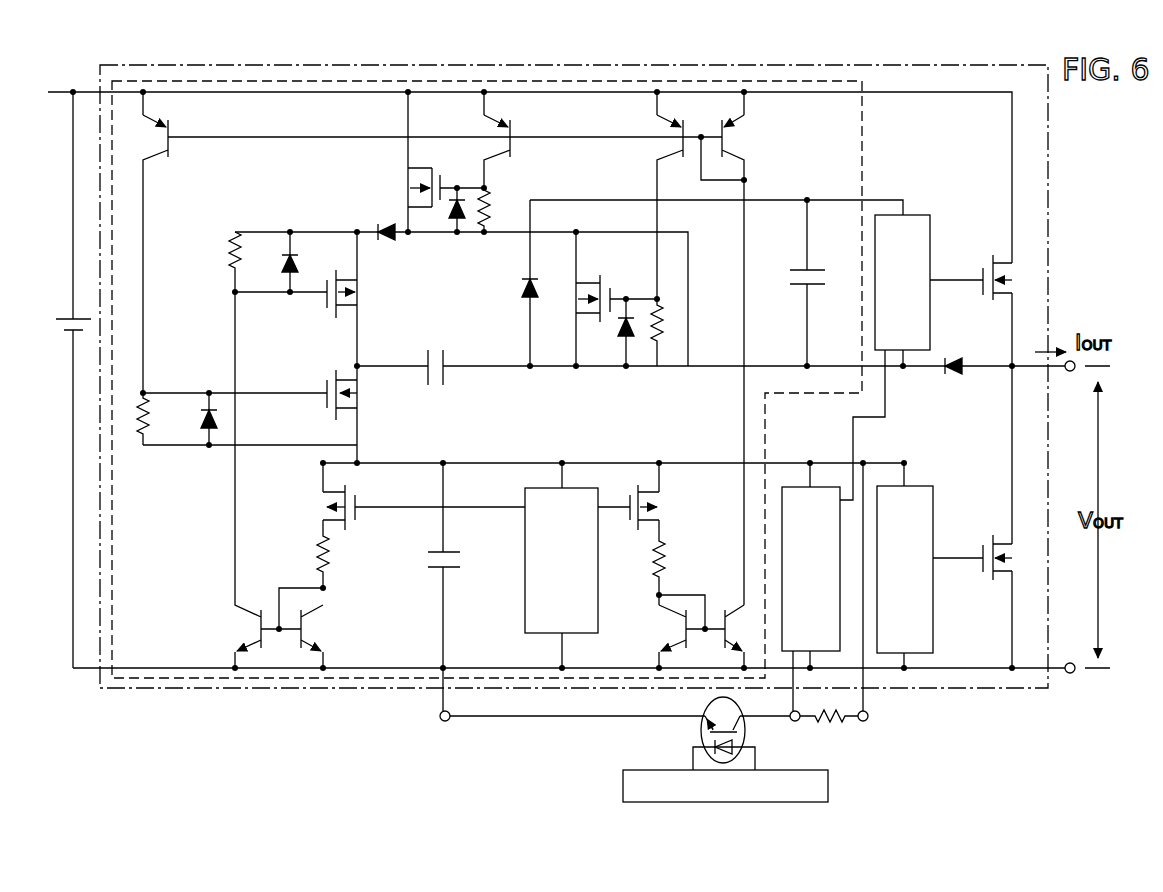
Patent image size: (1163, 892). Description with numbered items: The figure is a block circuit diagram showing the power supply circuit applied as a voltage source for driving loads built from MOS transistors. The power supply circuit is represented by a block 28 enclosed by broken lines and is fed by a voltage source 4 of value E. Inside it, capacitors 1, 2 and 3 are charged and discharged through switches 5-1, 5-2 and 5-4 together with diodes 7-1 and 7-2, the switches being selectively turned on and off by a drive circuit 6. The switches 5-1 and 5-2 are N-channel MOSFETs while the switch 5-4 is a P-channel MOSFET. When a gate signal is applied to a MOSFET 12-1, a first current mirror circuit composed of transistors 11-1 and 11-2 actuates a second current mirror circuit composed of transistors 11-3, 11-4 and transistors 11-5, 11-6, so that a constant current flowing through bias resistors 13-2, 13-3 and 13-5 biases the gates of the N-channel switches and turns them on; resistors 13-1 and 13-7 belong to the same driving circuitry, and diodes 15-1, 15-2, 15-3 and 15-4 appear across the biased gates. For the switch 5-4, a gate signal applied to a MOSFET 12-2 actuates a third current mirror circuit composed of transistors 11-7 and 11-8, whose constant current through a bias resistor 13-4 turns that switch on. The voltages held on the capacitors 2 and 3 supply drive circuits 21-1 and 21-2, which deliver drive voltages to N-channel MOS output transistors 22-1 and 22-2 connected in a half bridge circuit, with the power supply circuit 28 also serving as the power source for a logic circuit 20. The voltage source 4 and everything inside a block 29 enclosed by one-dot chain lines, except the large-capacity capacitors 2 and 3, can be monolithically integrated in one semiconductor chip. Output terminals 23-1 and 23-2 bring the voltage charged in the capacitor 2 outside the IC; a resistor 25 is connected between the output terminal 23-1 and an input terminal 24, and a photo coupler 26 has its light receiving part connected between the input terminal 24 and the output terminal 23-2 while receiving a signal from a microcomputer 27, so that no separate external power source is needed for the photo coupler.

The capacitor 1 is at (434, 350).
The capacitor 2 is at (464, 565).
The capacitor 3 is at (816, 268).
The voltage source 4 is at (57, 332).
The switch 5-1 is at (400, 178).
The switch 5-2 is at (608, 276).
The switch 5-4 is at (360, 296).
The drive circuit 6 is at (524, 603).
The diode 7-1 is at (522, 294).
The diode 7-2 is at (388, 240).
The transistor 11-1 is at (674, 630).
The transistor 11-2 is at (727, 603).
The transistor 11-3 is at (732, 133).
The transistor 11-4 is at (650, 129).
The transistor 11-5 is at (484, 129).
The transistor 11-6 is at (174, 128).
The transistor 11-7 is at (240, 631).
The transistor 11-8 is at (316, 631).
The MOSFET 12-1 is at (663, 500).
The MOSFET 12-2 is at (320, 507).
The resistor 13-1 is at (666, 556).
The bias resistor 13-2 is at (490, 200).
The bias resistor 13-3 is at (666, 335).
The bias resistor 13-4 is at (230, 248).
The bias resistor 13-5 is at (150, 415).
The resistor 13-7 is at (330, 552).
The zener diode 15-1 is at (618, 338).
The zener diode 15-2 is at (316, 263).
The zener diode 15-3 is at (200, 430).
The zener diode 15-4 is at (462, 217).
The logic circuit 20 is at (826, 487).
The drive circuit 21-1 is at (932, 232).
The drive circuit 21-2 is at (935, 494).
The N-channel MOS output transistor 22-1 is at (987, 303).
The N-channel MOS output transistor 22-2 is at (987, 583).
The output terminal 23-1 is at (868, 720).
The output terminal 23-2 is at (446, 722).
The input terminal 24 is at (795, 722).
The resistor 25 is at (832, 722).
The photo coupler 26 is at (700, 740).
The microcomputer 27 is at (830, 788).
The power supply circuit 28 is at (864, 127).
The block 29 is at (1050, 127).